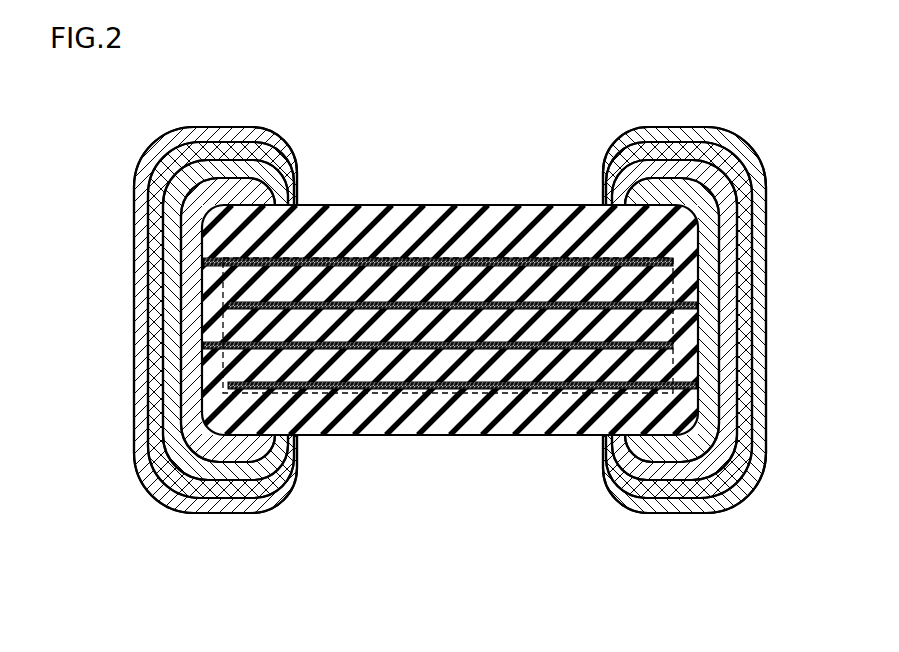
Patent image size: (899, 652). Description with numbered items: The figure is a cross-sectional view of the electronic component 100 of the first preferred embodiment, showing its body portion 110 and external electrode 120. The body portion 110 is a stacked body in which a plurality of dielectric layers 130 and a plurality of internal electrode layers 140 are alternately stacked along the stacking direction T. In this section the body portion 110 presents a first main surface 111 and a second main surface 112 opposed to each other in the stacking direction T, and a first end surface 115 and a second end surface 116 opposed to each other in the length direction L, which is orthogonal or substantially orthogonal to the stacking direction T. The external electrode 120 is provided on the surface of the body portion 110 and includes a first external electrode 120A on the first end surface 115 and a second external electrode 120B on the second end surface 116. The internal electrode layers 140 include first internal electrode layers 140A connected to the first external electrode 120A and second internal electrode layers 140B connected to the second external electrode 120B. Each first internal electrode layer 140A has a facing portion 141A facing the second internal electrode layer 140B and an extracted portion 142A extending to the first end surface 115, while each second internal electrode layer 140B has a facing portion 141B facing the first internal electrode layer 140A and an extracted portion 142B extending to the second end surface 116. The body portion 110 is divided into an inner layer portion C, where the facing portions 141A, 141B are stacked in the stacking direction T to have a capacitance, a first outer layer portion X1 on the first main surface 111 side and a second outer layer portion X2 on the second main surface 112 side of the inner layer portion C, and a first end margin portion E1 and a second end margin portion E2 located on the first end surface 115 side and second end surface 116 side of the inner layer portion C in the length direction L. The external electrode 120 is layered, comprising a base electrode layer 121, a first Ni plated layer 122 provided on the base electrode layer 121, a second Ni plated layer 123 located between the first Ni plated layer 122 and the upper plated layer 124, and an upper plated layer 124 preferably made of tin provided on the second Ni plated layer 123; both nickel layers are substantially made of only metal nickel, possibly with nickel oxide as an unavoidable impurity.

The electronic component 100 is at (787, 120).
The body portion 110 is at (450, 315).
The first main surface 111 is at (419, 196).
The second main surface 112 is at (598, 429).
The first end surface 115 is at (202, 318).
The second end surface 116 is at (700, 370).
The external electrode 120 is at (450, 299).
The first external electrode 120A is at (209, 127).
The second external electrode 120B is at (685, 127).
The base electrode layer 121 is at (190, 387).
The first Ni plated layer 122 is at (172, 353).
The second Ni plated layer 123 is at (157, 290).
The upper plated layer 124 is at (141, 258).
The dielectric layers 130 is at (503, 240).
The internal electrode layers 140 is at (450, 315).
The first internal electrode layer 140A is at (437, 298).
The second internal electrode layer 140B is at (463, 312).
The facing portion 141A is at (373, 262).
The facing portion 141B is at (444, 303).
The extracted portion 142A is at (214, 260).
The extracted portion 142B is at (700, 296).
The inner layer portion C is at (589, 256).
The first end margin portion E1 is at (208, 292).
The second end margin portion E2 is at (685, 268).
The first outer layer portion X1 is at (322, 205).
The second outer layer portion X2 is at (510, 435).
The stacking direction T is at (848, 207).
The length direction L is at (686, 597).